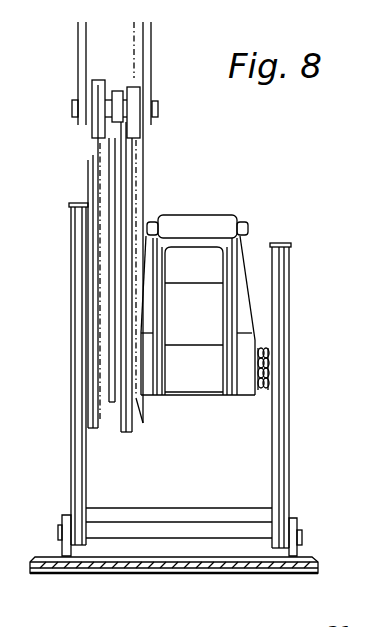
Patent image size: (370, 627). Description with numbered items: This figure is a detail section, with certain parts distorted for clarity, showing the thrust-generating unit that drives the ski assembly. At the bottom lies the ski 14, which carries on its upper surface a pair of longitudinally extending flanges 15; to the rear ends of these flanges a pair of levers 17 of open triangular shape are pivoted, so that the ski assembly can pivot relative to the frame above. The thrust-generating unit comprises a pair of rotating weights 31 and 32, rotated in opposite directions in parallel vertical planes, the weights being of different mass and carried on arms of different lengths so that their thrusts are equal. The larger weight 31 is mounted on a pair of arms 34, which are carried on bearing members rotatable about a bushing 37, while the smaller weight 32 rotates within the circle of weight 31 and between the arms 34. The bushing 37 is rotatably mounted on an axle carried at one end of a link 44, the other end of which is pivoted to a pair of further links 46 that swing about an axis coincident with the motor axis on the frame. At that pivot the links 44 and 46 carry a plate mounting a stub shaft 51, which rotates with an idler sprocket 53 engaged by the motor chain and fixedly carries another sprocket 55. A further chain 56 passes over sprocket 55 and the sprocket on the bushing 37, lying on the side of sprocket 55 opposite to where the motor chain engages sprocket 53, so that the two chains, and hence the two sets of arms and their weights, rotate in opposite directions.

The ski 14 is at (255, 568).
The flange 15 is at (62, 545).
The lever 17 is at (78, 403).
The rotating weight 31 is at (220, 227).
The rotating weight 32 is at (201, 275).
The arms 34 is at (242, 285).
The bushing 37 is at (289, 338).
The link 44 is at (120, 170).
The further link 46 is at (78, 45).
The stub shaft 51 is at (159, 118).
The idler sprocket 53 is at (137, 95).
The sprocket 55 is at (92, 86).
The further chain 56 is at (95, 144).